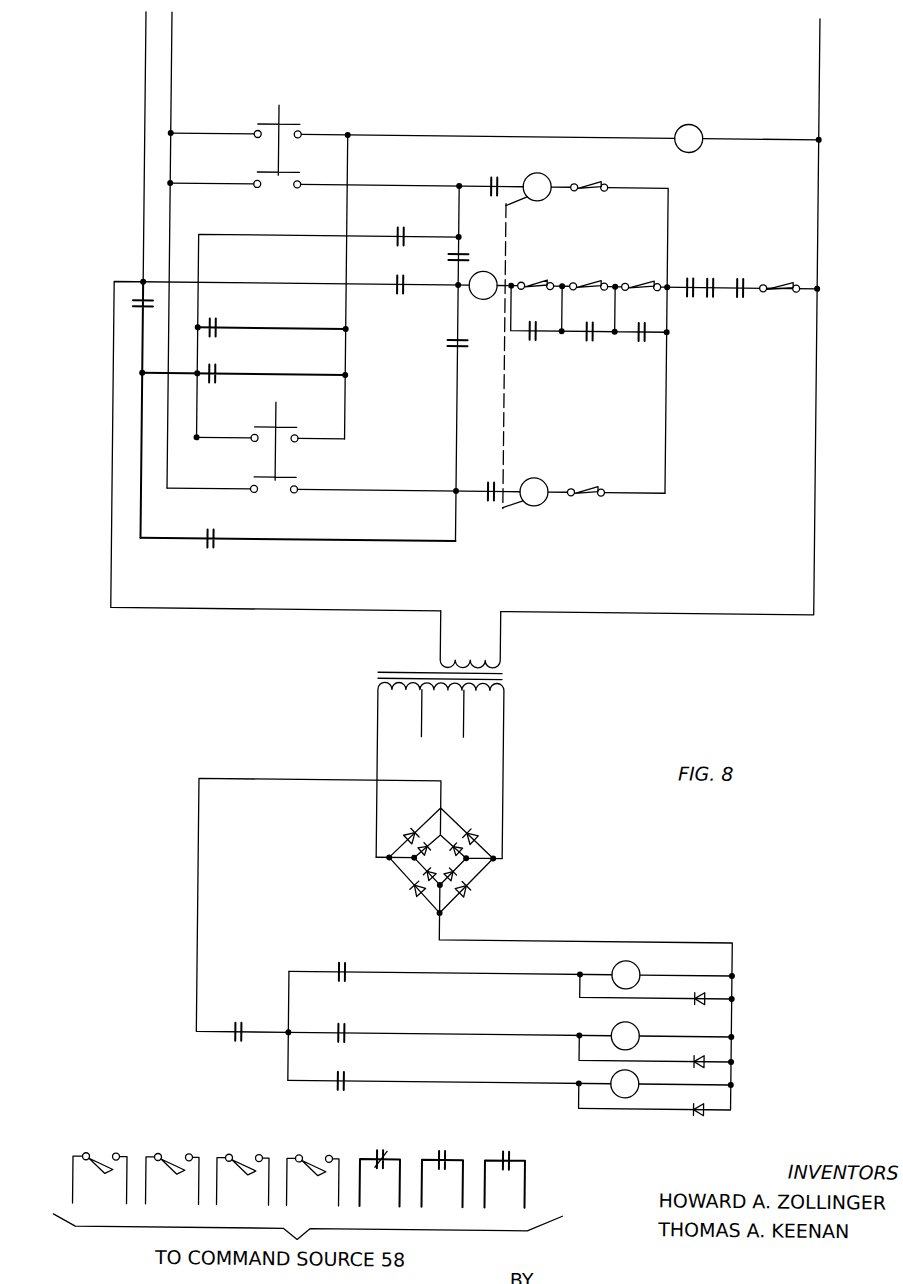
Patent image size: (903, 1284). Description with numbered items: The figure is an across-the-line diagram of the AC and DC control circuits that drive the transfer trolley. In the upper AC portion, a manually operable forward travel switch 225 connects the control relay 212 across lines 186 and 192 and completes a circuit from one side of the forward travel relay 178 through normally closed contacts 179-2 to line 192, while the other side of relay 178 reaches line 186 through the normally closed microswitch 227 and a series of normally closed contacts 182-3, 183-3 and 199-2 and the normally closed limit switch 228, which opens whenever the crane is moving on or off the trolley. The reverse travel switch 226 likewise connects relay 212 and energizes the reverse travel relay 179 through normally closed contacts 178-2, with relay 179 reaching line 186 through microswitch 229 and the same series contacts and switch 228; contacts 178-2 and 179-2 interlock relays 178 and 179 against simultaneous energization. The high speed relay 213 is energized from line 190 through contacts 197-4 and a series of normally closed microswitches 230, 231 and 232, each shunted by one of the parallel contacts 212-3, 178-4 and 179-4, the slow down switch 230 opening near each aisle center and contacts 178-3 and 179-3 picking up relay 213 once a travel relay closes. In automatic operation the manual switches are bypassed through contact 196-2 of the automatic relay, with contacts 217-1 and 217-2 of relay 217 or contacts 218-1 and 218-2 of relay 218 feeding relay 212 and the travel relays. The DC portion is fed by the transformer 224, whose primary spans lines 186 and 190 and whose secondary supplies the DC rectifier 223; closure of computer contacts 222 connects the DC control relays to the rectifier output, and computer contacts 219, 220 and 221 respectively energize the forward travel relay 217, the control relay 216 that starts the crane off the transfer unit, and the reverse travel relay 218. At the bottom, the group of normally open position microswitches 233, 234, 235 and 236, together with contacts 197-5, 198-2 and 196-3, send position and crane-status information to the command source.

The forward trolley travel relay 178 is at (540, 172).
The reverse trolley travel relay 179 is at (547, 500).
The AC line 186 is at (817, 97).
The AC line 190 is at (143, 67).
The AC line 192 is at (169, 69).
The control relay 212 is at (682, 123).
The high speed relay 213 is at (470, 294).
The control relay 216 is at (641, 960).
The forward travel relay 217 is at (624, 1024).
The reverse travel relay 218 is at (638, 1095).
The forward travel command contacts 219 is at (354, 1031).
The computer contacts 220 is at (354, 968).
The computer contacts 221 is at (354, 1079).
The computer contacts 222 is at (240, 1038).
The DC rectifier 223 is at (494, 866).
The transformer 224 is at (432, 655).
The forward travel switch 225 is at (288, 122).
The reverse travel switch 226 is at (280, 427).
The microswitch 227 is at (590, 182).
The limit switch 228 is at (786, 280).
The microswitch 229 is at (593, 487).
The slow down switch 230 is at (530, 281).
The microswitch 231 is at (590, 281).
The microswitch 232 is at (641, 281).
The microswitch 233 is at (102, 1158).
The microswitch 234 is at (176, 1158).
The microswitch 235 is at (246, 1158).
The microswitch 236 is at (318, 1158).
The normally closed contacts 178-2 is at (491, 502).
The contacts 178-3 is at (456, 253).
The contacts 178-4 is at (591, 338).
The normally closed contacts 179-2 is at (488, 180).
The contacts 179-3 is at (455, 348).
The contacts 179-4 is at (646, 336).
The normally closed contacts 182-3 is at (690, 294).
The normally closed contacts 183-3 is at (711, 276).
The contacts 196-2 is at (141, 300).
The contacts 196-3 is at (518, 1158).
The contacts 197-4 is at (396, 284).
The contacts 197-5 is at (392, 1155).
The contacts 198-2 is at (454, 1156).
The normally closed contacts 199-2 is at (742, 294).
The contacts 212-3 is at (531, 337).
The contacts 217-1 is at (218, 328).
The contacts 217-2 is at (396, 236).
The contacts 218-1 is at (218, 374).
The contacts 218-2 is at (218, 540).